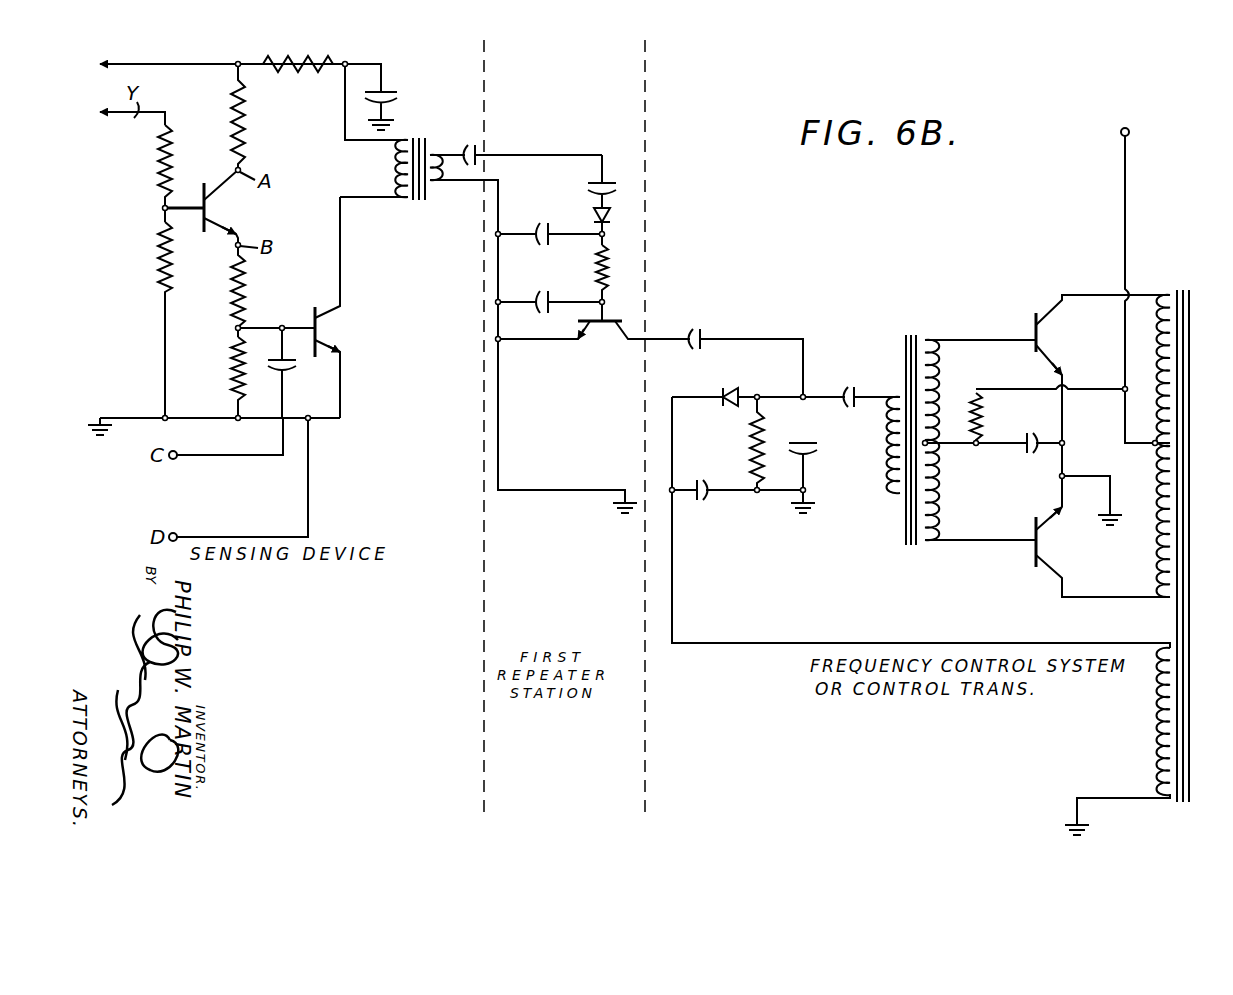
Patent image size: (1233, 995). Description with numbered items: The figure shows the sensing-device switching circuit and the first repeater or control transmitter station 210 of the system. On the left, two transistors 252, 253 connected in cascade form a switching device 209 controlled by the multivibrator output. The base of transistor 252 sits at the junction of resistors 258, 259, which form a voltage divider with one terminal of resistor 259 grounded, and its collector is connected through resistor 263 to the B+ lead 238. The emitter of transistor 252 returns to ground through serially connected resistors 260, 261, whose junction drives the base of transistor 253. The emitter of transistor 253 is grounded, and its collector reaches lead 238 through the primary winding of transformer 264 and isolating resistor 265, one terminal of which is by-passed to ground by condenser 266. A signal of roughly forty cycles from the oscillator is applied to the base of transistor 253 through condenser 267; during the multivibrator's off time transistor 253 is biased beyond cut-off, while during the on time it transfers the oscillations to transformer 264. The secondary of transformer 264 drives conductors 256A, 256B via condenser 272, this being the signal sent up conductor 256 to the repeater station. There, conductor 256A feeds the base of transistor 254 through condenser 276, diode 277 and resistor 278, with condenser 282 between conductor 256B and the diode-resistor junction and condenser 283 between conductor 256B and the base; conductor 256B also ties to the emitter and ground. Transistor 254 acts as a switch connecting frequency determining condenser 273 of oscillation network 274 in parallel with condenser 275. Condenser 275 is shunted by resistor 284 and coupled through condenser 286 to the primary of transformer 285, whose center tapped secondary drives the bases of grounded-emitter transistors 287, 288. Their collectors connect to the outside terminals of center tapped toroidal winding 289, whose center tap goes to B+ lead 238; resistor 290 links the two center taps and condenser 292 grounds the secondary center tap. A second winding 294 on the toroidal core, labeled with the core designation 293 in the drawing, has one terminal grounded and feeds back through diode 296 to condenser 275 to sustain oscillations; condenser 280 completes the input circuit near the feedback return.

The switching device 209 is at (432, 75).
The first repeater station 210 is at (941, 332).
The B+ lead 238 is at (140, 63).
The transistor 252 is at (200, 183).
The transistor 253 is at (313, 317).
The transistor 254 is at (615, 319).
The conductor 256 is at (588, 150).
The conductor 256A is at (583, 162).
The conductor 256B is at (470, 186).
The resistor 258 is at (170, 140).
The resistor 259 is at (160, 272).
The resistor 260 is at (225, 285).
The resistor 261 is at (232, 372).
The resistor 263 is at (243, 155).
The transformer 264 is at (418, 205).
The isolating resistor 265 is at (294, 73).
The condenser 266 is at (396, 102).
The condenser 267 is at (290, 382).
The condenser 272 is at (478, 152).
The frequency determining condenser 273 is at (706, 336).
The oscillation network 274 is at (793, 328).
The frequency determining condenser 275 is at (810, 456).
The condenser 276 is at (612, 183).
The diode 277 is at (612, 220).
The resistor 278 is at (612, 268).
The capacitor 280 is at (712, 498).
The condenser 282 is at (538, 228).
The condenser 283 is at (538, 296).
The resistor 284 is at (750, 445).
The transformer 285 is at (896, 386).
The condenser 286 is at (854, 388).
The transistor 287 is at (1032, 323).
The transistor 288 is at (1032, 555).
The center tapped toroidal winding 289 is at (1160, 300).
The resistor 290 is at (975, 392).
The condenser 292 is at (1026, 456).
The transformer core 293 is at (1216, 437).
The second winding 294 is at (1160, 755).
The diode 296 is at (737, 390).